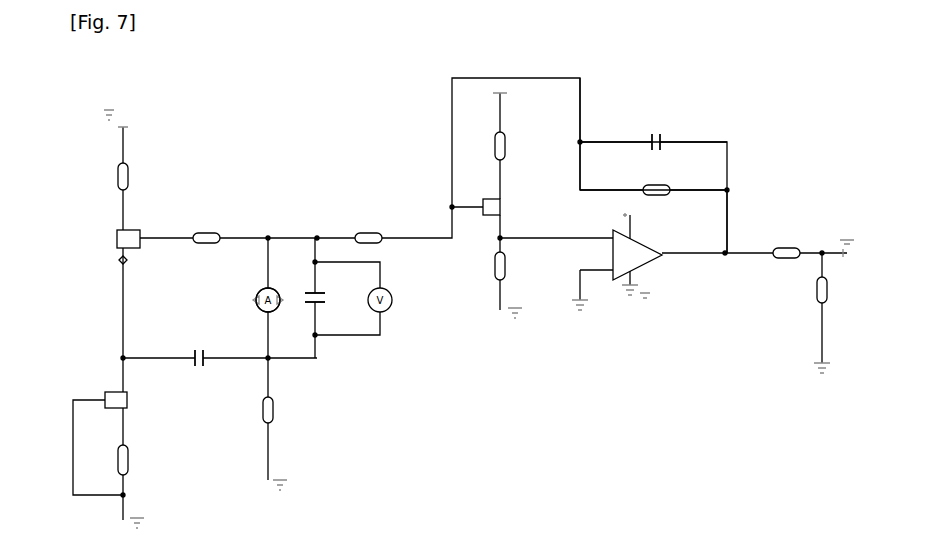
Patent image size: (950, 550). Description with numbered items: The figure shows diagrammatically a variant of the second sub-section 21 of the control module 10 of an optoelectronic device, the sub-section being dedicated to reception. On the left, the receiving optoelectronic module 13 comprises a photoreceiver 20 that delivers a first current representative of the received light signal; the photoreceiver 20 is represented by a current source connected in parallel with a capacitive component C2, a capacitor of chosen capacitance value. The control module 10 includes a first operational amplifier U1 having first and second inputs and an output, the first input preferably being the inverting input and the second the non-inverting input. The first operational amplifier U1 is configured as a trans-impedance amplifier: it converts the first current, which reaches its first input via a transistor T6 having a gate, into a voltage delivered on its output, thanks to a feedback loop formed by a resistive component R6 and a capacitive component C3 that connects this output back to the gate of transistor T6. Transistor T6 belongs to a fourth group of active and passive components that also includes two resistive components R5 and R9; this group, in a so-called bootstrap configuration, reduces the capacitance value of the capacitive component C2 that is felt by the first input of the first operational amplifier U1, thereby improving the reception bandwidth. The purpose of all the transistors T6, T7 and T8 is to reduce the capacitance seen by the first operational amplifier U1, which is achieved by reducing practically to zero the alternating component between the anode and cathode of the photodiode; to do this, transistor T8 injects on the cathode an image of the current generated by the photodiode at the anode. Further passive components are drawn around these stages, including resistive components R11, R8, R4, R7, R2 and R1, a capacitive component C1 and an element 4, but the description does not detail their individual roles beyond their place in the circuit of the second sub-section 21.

The resistor R11 is at (116, 178).
The transistor T8 is at (121, 242).
The transistor T7 is at (110, 390).
The transistor T6 is at (505, 207).
The resistor R8 is at (205, 230).
The resistor R4 is at (370, 230).
The resistive component R9 is at (507, 146).
The resistive component R5 is at (498, 264).
The resistive component of feedback loop R6 is at (660, 195).
The resistor R7 is at (782, 258).
The resistor R2 is at (826, 292).
The resistor R1 is at (128, 460).
The load resistor 4 is at (273, 412).
The capacitor C1 is at (204, 364).
The capacitive component C2 is at (320, 300).
The capacitive component of feedback loop C3 is at (662, 138).
The first operational amplifier U1 is at (648, 262).
The receiving optoelectronic module 13 is at (215, 312).
The photoreceiver 20 is at (253, 314).
The second sub-section 21 is at (728, 165).
The control module 10 is at (753, 180).